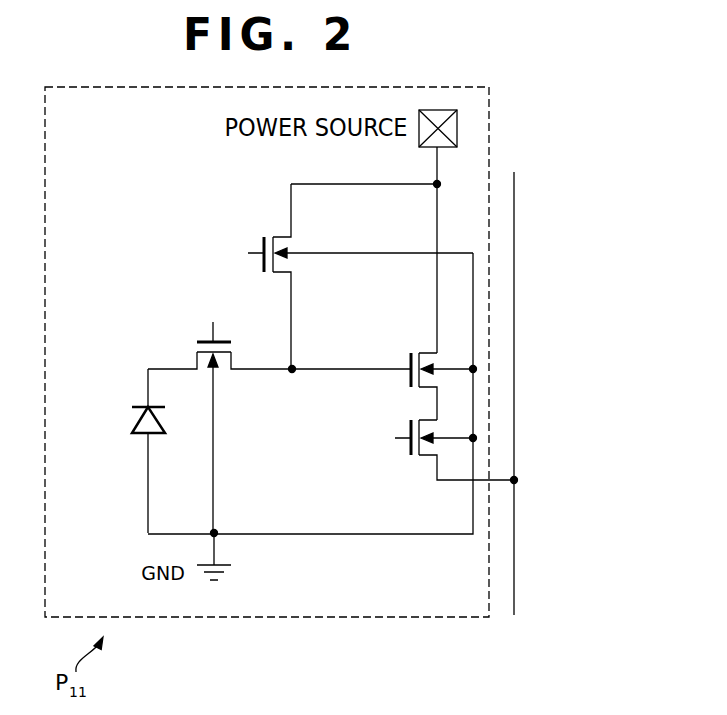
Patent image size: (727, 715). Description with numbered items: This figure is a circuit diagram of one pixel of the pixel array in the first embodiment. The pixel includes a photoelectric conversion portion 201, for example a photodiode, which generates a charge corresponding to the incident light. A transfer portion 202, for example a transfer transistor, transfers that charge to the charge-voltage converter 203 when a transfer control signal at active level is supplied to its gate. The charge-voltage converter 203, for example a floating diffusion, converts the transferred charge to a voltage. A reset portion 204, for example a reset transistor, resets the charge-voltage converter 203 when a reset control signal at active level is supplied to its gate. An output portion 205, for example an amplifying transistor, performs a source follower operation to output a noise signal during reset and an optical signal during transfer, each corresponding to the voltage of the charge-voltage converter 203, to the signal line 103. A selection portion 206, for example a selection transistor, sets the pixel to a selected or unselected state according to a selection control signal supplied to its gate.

The signal line 103 is at (530, 572).
The photoelectric conversion portion 201 is at (140, 414).
The transfer portion 202 is at (197, 348).
The charge-voltage converter 203 is at (291, 372).
The reset portion 204 is at (269, 236).
The output portion 205 is at (415, 348).
The selection portion 206 is at (413, 460).